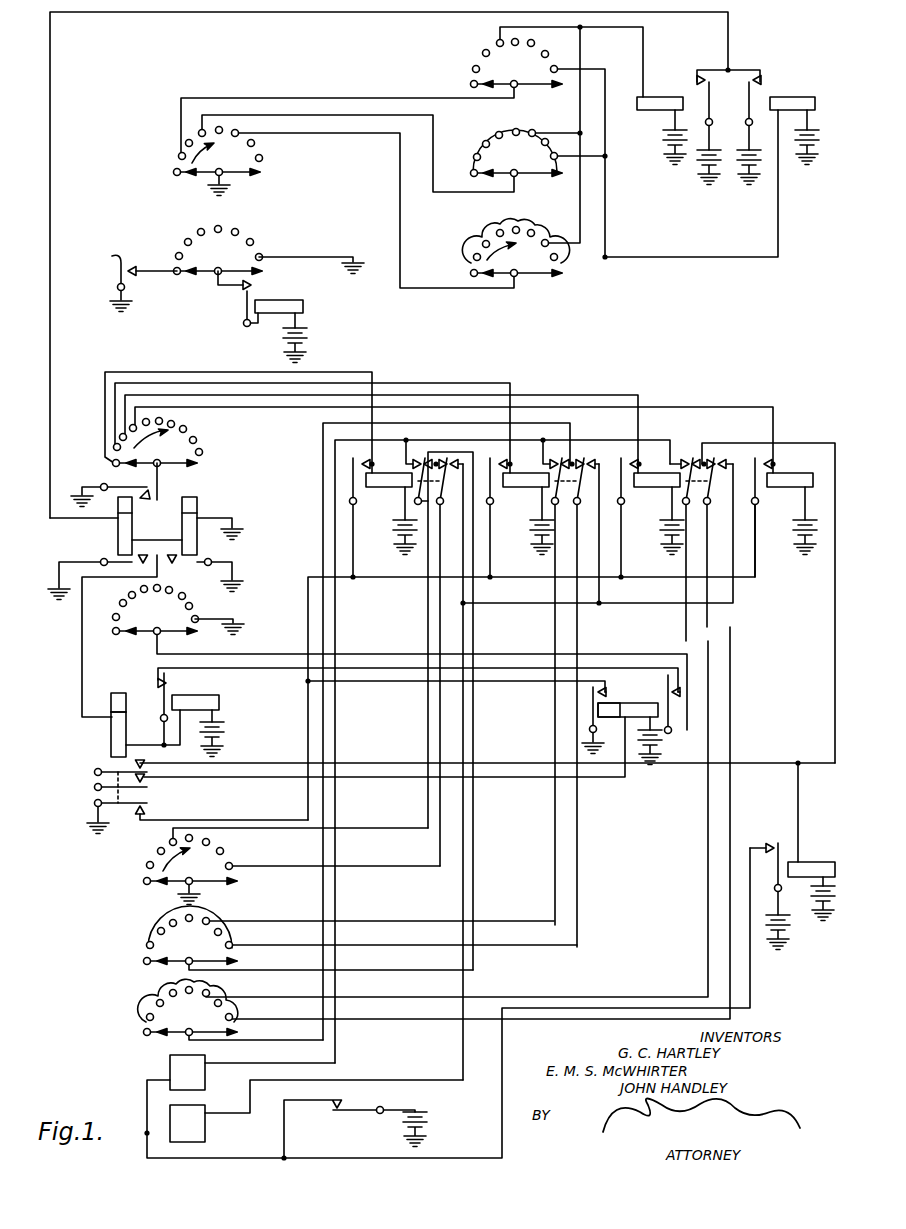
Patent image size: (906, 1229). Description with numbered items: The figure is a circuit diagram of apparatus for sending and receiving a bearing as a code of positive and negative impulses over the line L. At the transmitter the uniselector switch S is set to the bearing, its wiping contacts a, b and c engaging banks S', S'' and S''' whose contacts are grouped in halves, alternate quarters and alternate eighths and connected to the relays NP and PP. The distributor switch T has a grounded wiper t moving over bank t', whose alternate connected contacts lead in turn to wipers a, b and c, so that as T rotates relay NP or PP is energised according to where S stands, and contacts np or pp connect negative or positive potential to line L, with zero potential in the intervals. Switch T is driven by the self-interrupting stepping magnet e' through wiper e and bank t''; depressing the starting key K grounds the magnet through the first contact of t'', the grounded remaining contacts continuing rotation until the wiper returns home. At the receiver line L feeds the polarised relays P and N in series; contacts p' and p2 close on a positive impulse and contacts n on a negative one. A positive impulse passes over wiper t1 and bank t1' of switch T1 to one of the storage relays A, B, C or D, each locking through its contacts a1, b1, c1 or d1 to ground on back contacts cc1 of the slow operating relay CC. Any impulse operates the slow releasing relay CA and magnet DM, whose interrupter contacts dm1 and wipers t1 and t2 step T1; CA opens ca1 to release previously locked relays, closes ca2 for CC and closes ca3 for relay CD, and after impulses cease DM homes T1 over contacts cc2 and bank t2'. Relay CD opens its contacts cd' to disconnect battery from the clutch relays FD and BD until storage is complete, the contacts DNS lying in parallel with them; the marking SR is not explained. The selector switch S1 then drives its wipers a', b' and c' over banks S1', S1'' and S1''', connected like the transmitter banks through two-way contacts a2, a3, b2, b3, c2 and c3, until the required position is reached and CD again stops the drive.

The line L is at (52, 347).
The uniselector switch T is at (153, 197).
The switch bank t' is at (196, 144).
The wiper t is at (217, 186).
The bank of contacts t'' is at (270, 241).
The wiper e is at (218, 291).
The starting key K is at (108, 263).
The stepping magnet e' is at (262, 316).
The uniselector switch S is at (511, 174).
The bank of contacts S' is at (499, 59).
The wiping contact a is at (517, 93).
The bank of contacts S'' is at (505, 173).
The wiping contact b is at (517, 184).
The bank of contacts S''' is at (511, 253).
The wiping contact c is at (517, 284).
The contacts of relay NP np is at (702, 79).
The contacts of relay PP pp is at (760, 78).
The relay NP is at (662, 122).
The relay PP is at (794, 119).
The bank of contacts t1' is at (154, 447).
The wiper t1 is at (205, 481).
The contacts of relay P p' is at (133, 491).
The polarised relay P is at (115, 530).
The polarised relay N is at (181, 530).
The contacts of relay P p2 is at (138, 562).
The contacts of relay N n is at (168, 561).
The bank of contacts t2' is at (170, 633).
The wiper t2 is at (162, 640).
The switch T1 is at (149, 642).
The slow releasing relay CA is at (118, 736).
The slow release relay SR is at (118, 704).
The interrupter contacts dm1 is at (185, 710).
The magnet DM is at (198, 726).
The contacts of relay CA ca3 is at (152, 768).
The contacts of relay CA ca2 is at (150, 780).
The contacts of relay CA ca1 is at (150, 812).
The storage relay A is at (391, 505).
The locking contacts a1 is at (357, 511).
The two-way contacts a2 is at (448, 449).
The two-way contacts a3 is at (420, 447).
The storage relay B is at (528, 505).
The locking contacts b1 is at (494, 454).
The two-way contacts b2 is at (586, 452).
The two-way contacts b3 is at (563, 454).
The storage relay C is at (659, 505).
The locking contacts c1 is at (628, 454).
The two-way contacts c2 is at (716, 454).
The two-way contacts c3 is at (678, 454).
The storage relay D is at (792, 505).
The locking contacts d1 is at (760, 454).
The back contacts of relay CC cc1 is at (587, 697).
The slow operating relay CC is at (630, 725).
The back contacts of relay CC cc2 is at (666, 680).
The relay CD is at (811, 842).
The normally closed contacts of relay CD cd' is at (768, 881).
The selector switch S1 is at (167, 956).
The bank of contacts S1' is at (178, 865).
The wiper a' is at (195, 892).
The bank of contacts S1'' is at (176, 939).
The wiper b' is at (185, 977).
The bank of contacts S1''' is at (182, 1005).
The wiper c' is at (187, 1044).
The clutch relay FD is at (187, 1072).
The clutch relay BD is at (187, 1123).
The switch DNS is at (355, 1129).